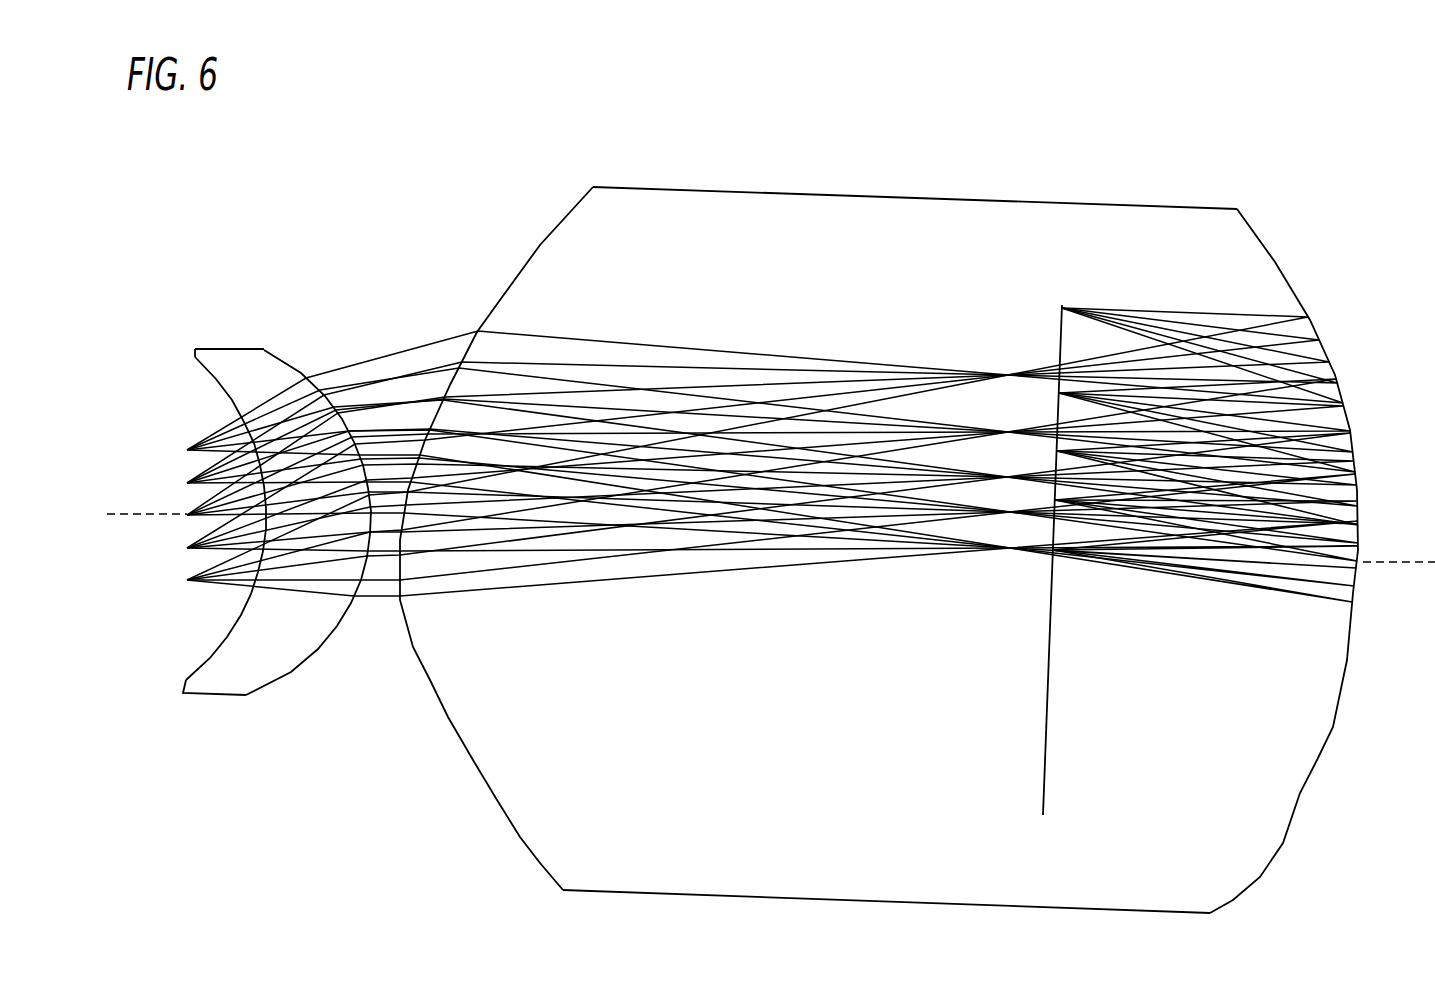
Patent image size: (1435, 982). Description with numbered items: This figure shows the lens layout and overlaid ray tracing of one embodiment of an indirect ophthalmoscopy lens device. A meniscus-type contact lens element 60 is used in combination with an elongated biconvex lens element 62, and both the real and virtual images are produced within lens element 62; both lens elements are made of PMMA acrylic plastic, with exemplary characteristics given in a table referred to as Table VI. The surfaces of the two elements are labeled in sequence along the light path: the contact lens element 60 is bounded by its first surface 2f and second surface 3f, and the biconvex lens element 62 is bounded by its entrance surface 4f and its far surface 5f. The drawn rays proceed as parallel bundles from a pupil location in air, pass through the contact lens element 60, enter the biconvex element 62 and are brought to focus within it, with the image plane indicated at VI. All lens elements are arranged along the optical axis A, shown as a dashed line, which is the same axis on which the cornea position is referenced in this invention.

The meniscus-type contact lens element 60 is at (270, 374).
The elongated biconvex lens element 62 is at (893, 223).
The first refracting surface of lens 2f is at (211, 653).
The second refracting surface of lens 3f is at (316, 649).
The entrance refracting surface of block 4f is at (450, 716).
The reflecting surface 5f is at (1300, 800).
The image plane VI is at (1046, 728).
The optical axis A is at (1410, 556).